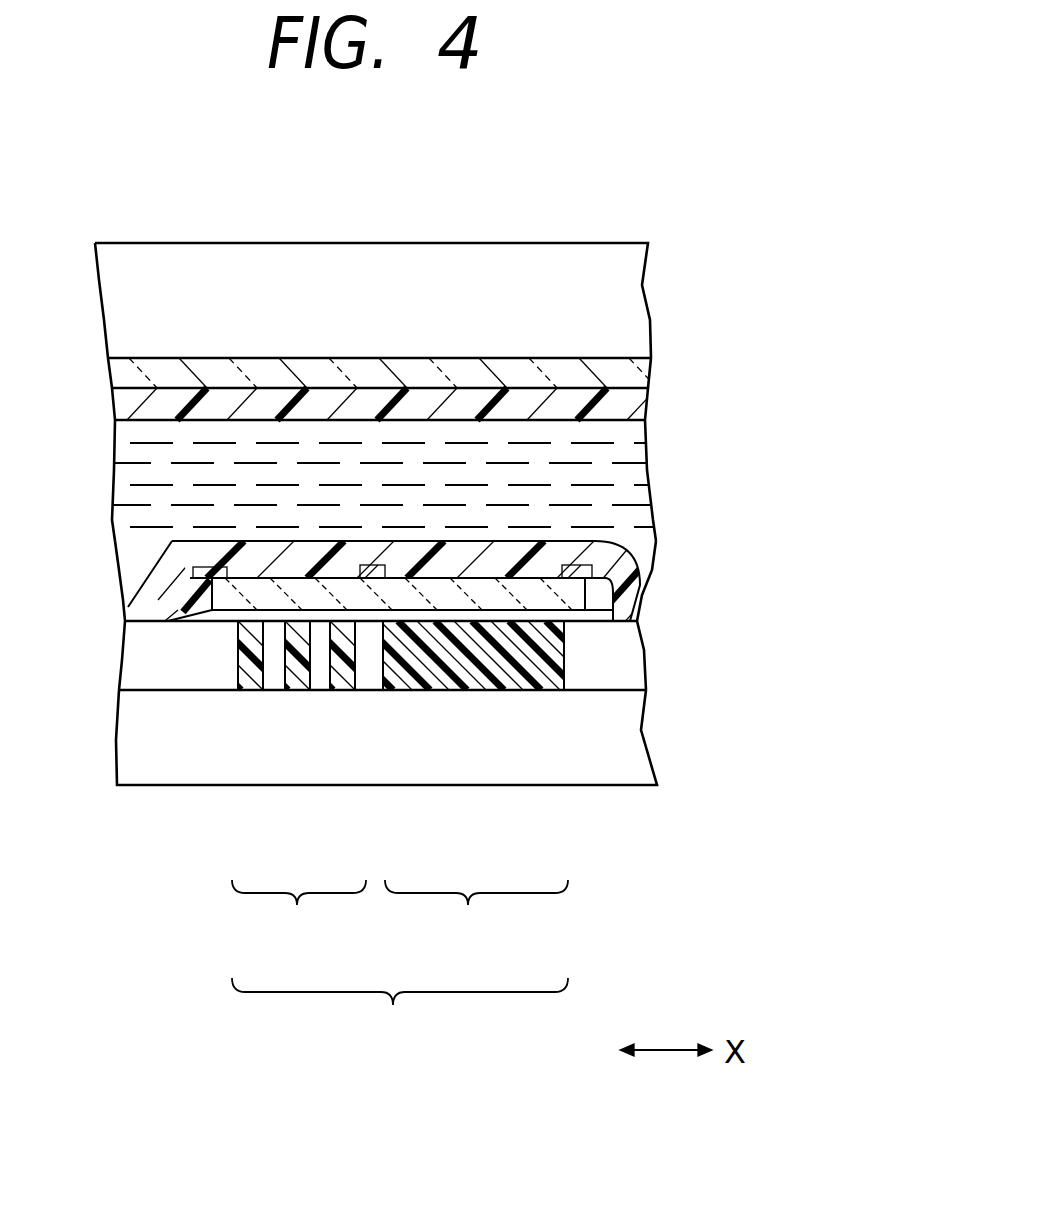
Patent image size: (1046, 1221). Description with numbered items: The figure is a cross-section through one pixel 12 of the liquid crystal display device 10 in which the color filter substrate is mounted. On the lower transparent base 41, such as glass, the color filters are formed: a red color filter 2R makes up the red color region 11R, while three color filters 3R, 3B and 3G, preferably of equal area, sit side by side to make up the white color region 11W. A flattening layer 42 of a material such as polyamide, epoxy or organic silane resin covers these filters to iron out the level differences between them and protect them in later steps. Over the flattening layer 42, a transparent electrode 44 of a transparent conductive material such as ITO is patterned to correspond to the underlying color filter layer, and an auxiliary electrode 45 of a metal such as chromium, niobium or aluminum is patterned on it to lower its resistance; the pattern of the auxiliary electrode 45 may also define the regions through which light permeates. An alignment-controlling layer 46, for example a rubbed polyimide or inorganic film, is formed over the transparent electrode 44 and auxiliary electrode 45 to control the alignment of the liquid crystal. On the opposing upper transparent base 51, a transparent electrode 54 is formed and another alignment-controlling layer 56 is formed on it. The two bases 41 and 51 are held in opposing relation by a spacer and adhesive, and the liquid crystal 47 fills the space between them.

The liquid crystal display device 10 is at (762, 622).
The transparent base 51 is at (627, 302).
The transparent electrode 54 is at (635, 374).
The alignment-controlling layer 56 is at (642, 404).
The liquid crystal 47 is at (633, 466).
The auxiliary electrode 45 is at (645, 548).
The alignment-controlling layer 46 is at (640, 587).
The transparent electrode 44 is at (193, 578).
The flattening layer 42 is at (623, 646).
The transparent base 41 is at (625, 740).
The color filter 2R is at (552, 660).
The color filter 3R is at (250, 690).
The color filter 3B is at (297, 690).
The color filter 3G is at (343, 690).
The color region 11W is at (299, 913).
The color region 11R is at (476, 913).
The pixel 12 is at (400, 1012).